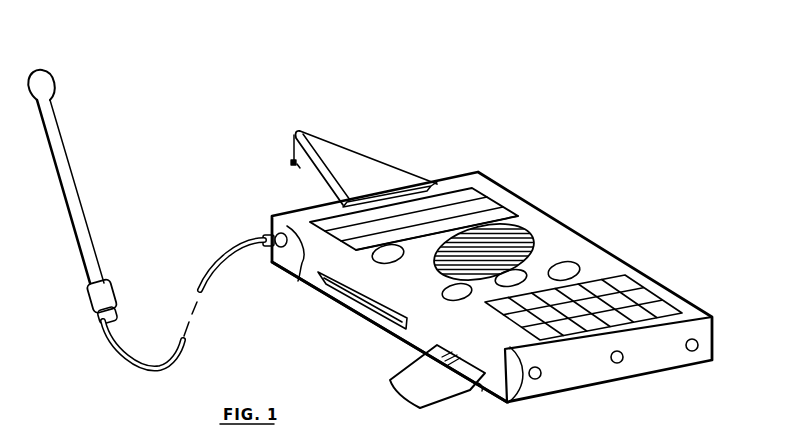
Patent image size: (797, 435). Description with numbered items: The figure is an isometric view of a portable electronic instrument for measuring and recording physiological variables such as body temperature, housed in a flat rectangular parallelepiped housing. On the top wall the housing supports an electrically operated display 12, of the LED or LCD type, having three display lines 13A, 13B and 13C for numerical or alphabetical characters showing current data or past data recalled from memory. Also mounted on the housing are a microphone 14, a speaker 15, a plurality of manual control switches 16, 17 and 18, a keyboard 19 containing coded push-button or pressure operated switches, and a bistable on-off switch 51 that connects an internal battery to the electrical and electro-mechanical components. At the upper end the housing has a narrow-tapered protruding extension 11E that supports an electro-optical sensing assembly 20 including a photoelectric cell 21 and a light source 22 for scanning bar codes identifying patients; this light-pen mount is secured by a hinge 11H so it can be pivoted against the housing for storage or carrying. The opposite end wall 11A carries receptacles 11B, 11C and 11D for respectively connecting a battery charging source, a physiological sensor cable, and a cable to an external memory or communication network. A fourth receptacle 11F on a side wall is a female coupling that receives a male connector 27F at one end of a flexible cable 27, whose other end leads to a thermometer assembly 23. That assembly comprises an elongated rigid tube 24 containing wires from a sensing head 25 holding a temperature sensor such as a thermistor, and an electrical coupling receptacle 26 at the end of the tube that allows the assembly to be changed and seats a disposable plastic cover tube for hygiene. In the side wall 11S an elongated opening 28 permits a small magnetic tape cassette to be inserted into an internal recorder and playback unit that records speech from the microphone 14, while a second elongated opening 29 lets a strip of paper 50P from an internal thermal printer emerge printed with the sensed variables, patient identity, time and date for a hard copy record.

The end wall 11A is at (708, 343).
The receptacle 11B is at (539, 379).
The receptacle 11C is at (618, 363).
The receptacle 11D is at (694, 351).
The protruding extension 11E is at (337, 158).
The fourth receptacle 11F is at (300, 282).
The hinge 11H is at (397, 185).
The side wall 11S is at (400, 339).
The display 12 is at (448, 192).
The display line 13A is at (455, 198).
The display line 13B is at (473, 207).
The display line 13C is at (487, 215).
The microphone 14 is at (380, 258).
The speaker 15 is at (533, 237).
The manual control switch 16 is at (445, 287).
The manual control switch 17 is at (523, 277).
The manual control switch 18 is at (577, 263).
The keyboard 19 is at (622, 285).
The electro-optical sensing assembly 20 is at (291, 163).
The photoelectric cell 21 is at (293, 160).
The light source 22 is at (297, 166).
The thermometer assembly 23 is at (72, 175).
The elongated rigid tube 24 is at (53, 128).
The sensing head 25 is at (44, 80).
The electrical coupling receptacle 26 is at (100, 292).
The flexible cable 27 is at (213, 270).
The male connector 27F is at (266, 233).
The elongated opening 28 is at (357, 305).
The elongated opening 29 is at (482, 390).
The strip of paper 50P is at (405, 387).
The bistable on-off switch 51 is at (513, 383).